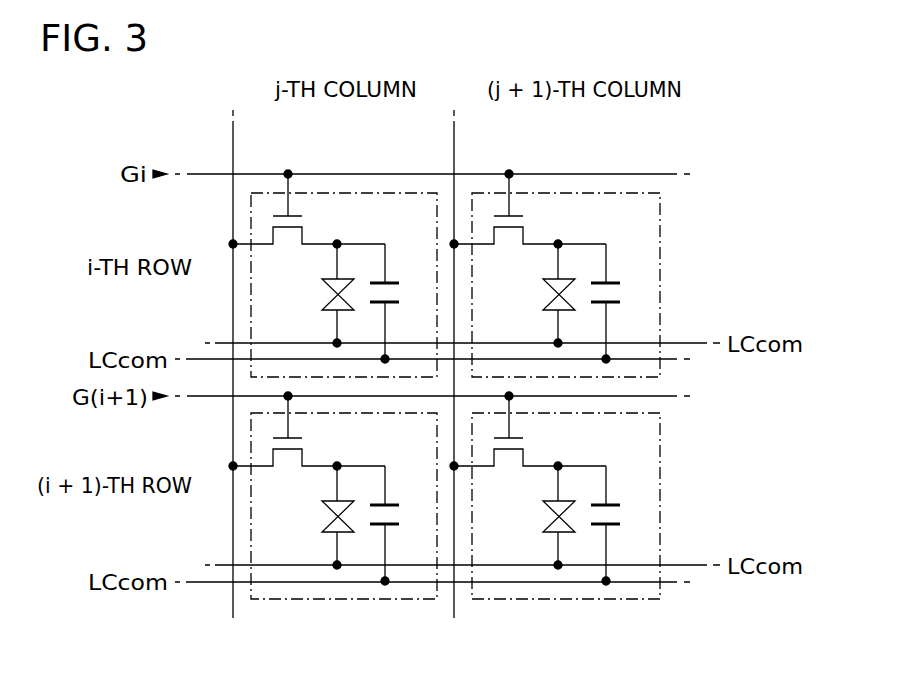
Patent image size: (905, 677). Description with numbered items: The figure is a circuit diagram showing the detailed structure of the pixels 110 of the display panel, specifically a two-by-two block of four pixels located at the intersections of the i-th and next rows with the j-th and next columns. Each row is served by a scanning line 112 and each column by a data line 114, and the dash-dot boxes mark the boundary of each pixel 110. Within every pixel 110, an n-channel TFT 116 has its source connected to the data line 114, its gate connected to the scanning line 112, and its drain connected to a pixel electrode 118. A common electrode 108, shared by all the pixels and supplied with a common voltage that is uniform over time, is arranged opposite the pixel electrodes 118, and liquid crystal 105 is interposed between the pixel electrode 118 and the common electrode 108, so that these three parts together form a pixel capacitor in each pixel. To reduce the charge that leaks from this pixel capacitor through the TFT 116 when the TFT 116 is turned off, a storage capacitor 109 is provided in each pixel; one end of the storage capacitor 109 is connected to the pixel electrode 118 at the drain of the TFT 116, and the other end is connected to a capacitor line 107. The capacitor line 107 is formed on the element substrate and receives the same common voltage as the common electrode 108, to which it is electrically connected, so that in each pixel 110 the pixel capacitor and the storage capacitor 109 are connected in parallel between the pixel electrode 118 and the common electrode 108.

The liquid crystal 105 is at (328, 293).
The capacitor line 107 is at (200, 359).
The common electrode 108 is at (690, 343).
The storage capacitor 109 is at (400, 298).
The pixel 110 is at (398, 192).
The scanning line 112 is at (215, 175).
The data line 114 is at (233, 158).
The n-channel TFT 116 is at (304, 233).
The pixel electrode 118 is at (327, 280).